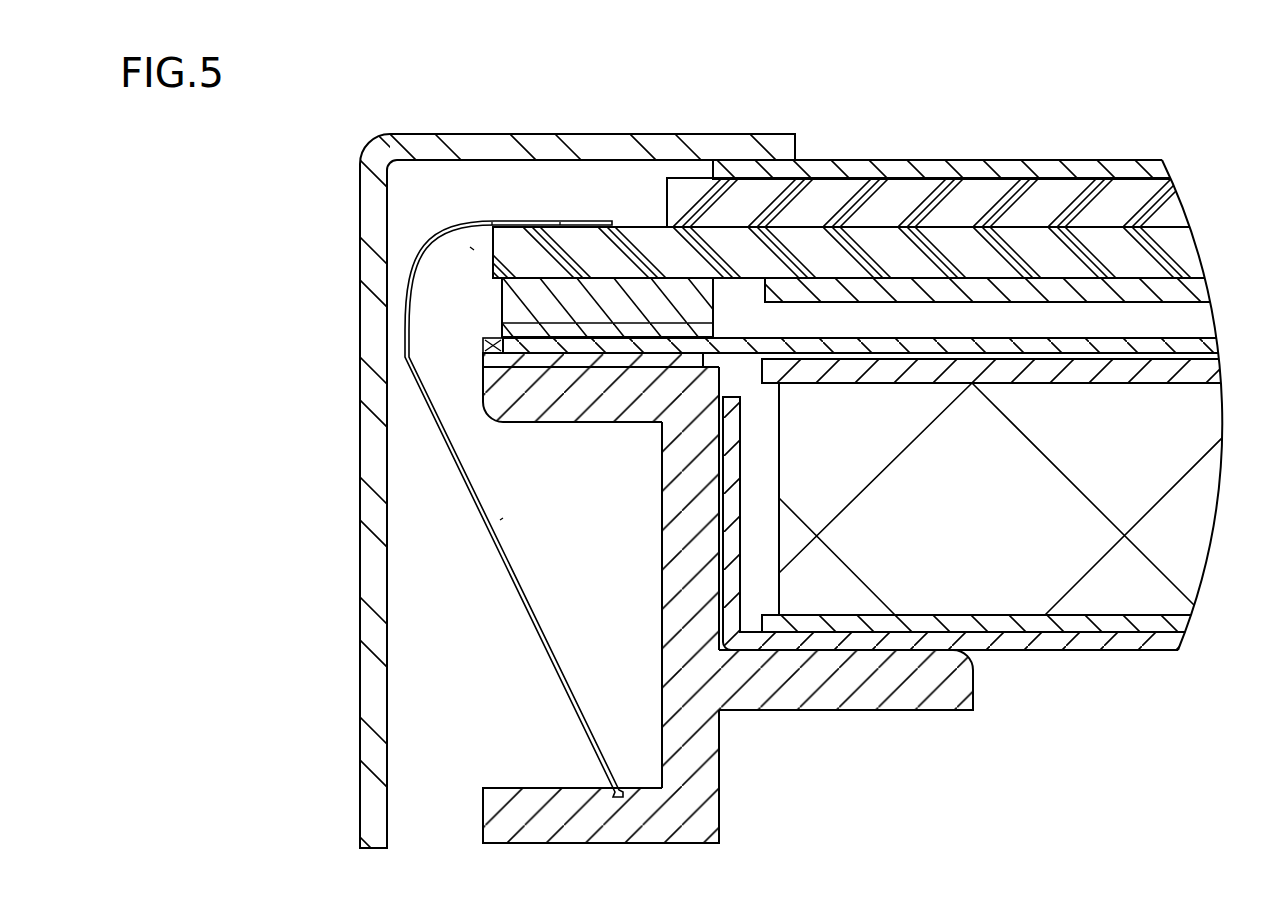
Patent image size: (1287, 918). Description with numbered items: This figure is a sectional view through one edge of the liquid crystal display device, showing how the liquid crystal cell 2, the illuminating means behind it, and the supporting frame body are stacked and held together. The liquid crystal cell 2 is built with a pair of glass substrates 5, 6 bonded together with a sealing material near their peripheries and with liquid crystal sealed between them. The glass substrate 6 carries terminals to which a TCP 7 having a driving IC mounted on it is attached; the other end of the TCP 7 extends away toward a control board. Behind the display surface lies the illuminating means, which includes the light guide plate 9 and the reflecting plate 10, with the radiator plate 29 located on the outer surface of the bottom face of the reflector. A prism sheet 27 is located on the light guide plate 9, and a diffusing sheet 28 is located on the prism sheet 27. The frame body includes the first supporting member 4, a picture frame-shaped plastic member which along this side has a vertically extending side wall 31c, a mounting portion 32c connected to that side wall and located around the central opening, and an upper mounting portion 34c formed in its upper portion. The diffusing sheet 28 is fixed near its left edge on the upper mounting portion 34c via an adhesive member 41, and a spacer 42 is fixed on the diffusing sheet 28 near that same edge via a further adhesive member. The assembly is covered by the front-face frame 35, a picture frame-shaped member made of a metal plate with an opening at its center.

The liquid crystal cell 2 is at (958, 166).
The first supporting member 4 is at (728, 598).
The glass substrate 5 is at (1138, 196).
The glass substrate 6 is at (1180, 246).
The TCP (tape carrier package) 7 is at (478, 522).
The light guide plate 9 is at (1178, 527).
The reflecting plate 10 is at (1167, 612).
The prism sheet 27 is at (1183, 387).
The diffusing sheet 28 is at (485, 344).
The radiator plate 29 is at (1030, 640).
The side wall 31c is at (672, 545).
The mounting portion 32c is at (822, 670).
The upper mounting portion 34c is at (550, 400).
The front-face frame 35 is at (540, 135).
The adhesive member 41 is at (485, 373).
The spacer 42 is at (510, 305).